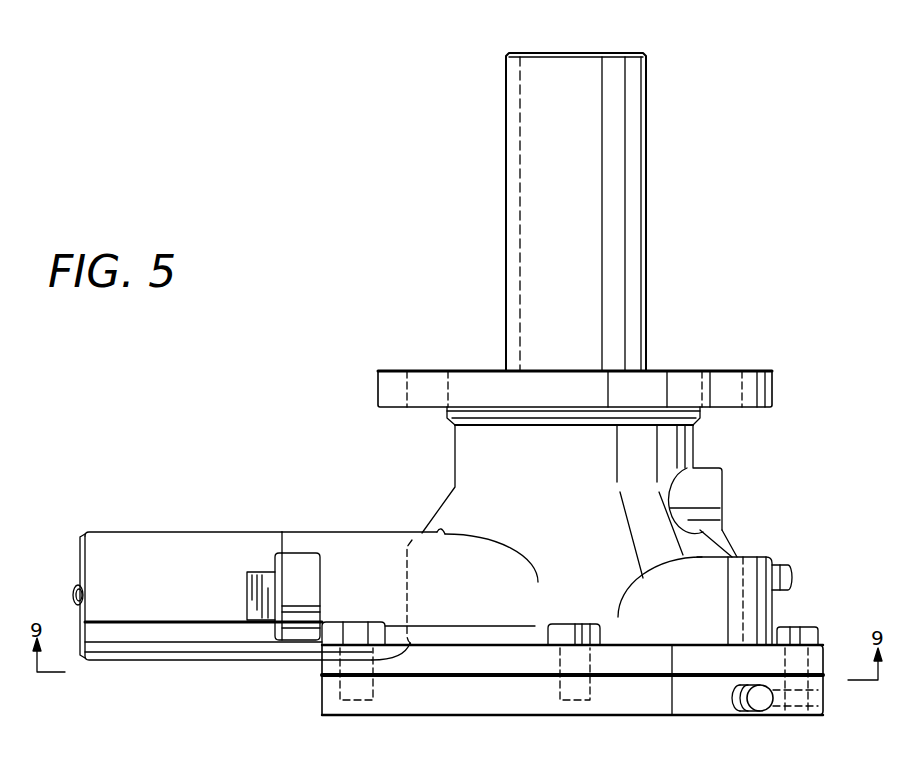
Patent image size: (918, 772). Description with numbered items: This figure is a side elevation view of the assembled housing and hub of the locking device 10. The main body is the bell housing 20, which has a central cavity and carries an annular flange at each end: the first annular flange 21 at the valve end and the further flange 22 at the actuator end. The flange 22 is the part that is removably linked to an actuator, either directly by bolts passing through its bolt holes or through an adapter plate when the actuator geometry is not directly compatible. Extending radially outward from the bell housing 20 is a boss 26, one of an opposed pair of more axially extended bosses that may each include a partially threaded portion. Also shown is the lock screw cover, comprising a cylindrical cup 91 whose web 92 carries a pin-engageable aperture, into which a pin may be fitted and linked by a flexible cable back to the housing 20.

The locking device 10 is at (327, 192).
The housing 20 is at (468, 458).
The first annular flange 21 is at (632, 660).
The flange 22 is at (722, 371).
The boss 26 is at (352, 532).
The cylindrical cup 91 is at (176, 532).
The web 92 is at (82, 550).